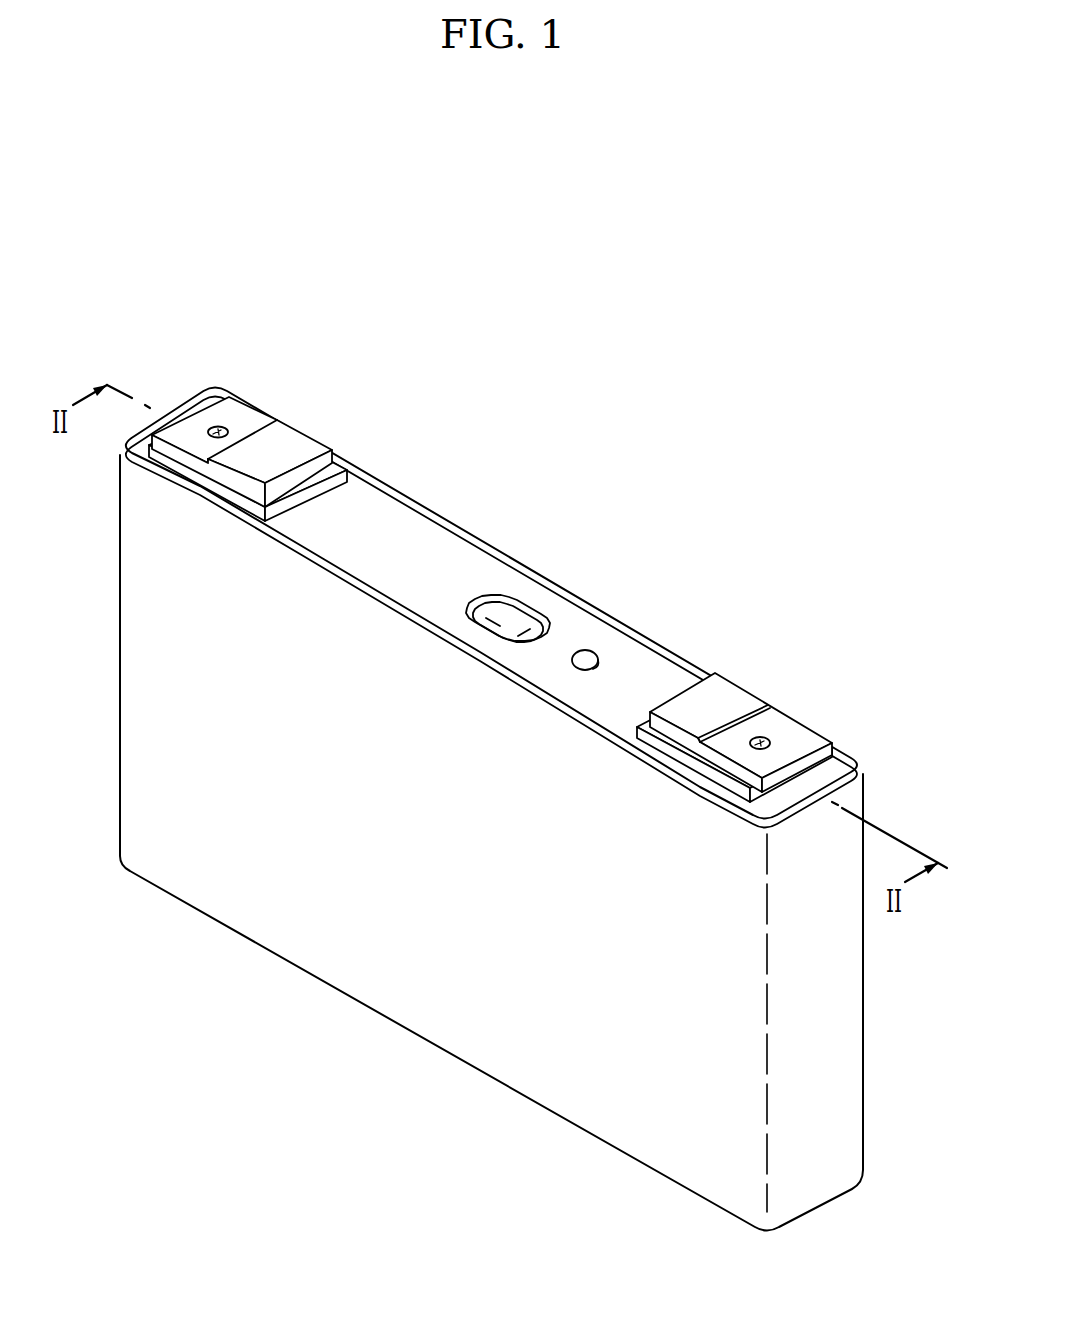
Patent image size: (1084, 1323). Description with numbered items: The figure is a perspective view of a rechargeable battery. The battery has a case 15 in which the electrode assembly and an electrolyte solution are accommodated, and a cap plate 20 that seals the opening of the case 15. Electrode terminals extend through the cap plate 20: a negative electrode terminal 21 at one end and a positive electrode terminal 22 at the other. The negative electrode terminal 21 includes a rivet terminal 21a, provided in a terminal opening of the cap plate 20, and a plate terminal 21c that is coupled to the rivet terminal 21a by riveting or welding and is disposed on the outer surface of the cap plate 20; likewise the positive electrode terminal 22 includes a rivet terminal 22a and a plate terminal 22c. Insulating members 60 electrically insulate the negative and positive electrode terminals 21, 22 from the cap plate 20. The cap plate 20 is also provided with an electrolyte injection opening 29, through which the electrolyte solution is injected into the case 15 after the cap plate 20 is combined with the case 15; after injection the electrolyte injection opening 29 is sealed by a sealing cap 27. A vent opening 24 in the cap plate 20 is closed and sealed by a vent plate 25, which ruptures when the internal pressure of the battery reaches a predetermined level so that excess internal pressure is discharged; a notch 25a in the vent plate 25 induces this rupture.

The case 15 is at (385, 987).
The cap plate 20 is at (410, 530).
The negative electrode terminal 21 is at (274, 404).
The rivet terminal 21a is at (219, 427).
The plate terminal 21c is at (256, 428).
The positive electrode terminal 22 is at (788, 695).
The rivet terminal 22a is at (763, 738).
The plate terminal 22c is at (815, 739).
The vent opening 24 is at (535, 611).
The vent plate 25 is at (511, 616).
The notch 25a is at (497, 612).
The sealing cap 27 is at (585, 651).
The electrolyte injection opening 29 is at (598, 659).
The insulating member 60 is at (345, 464).